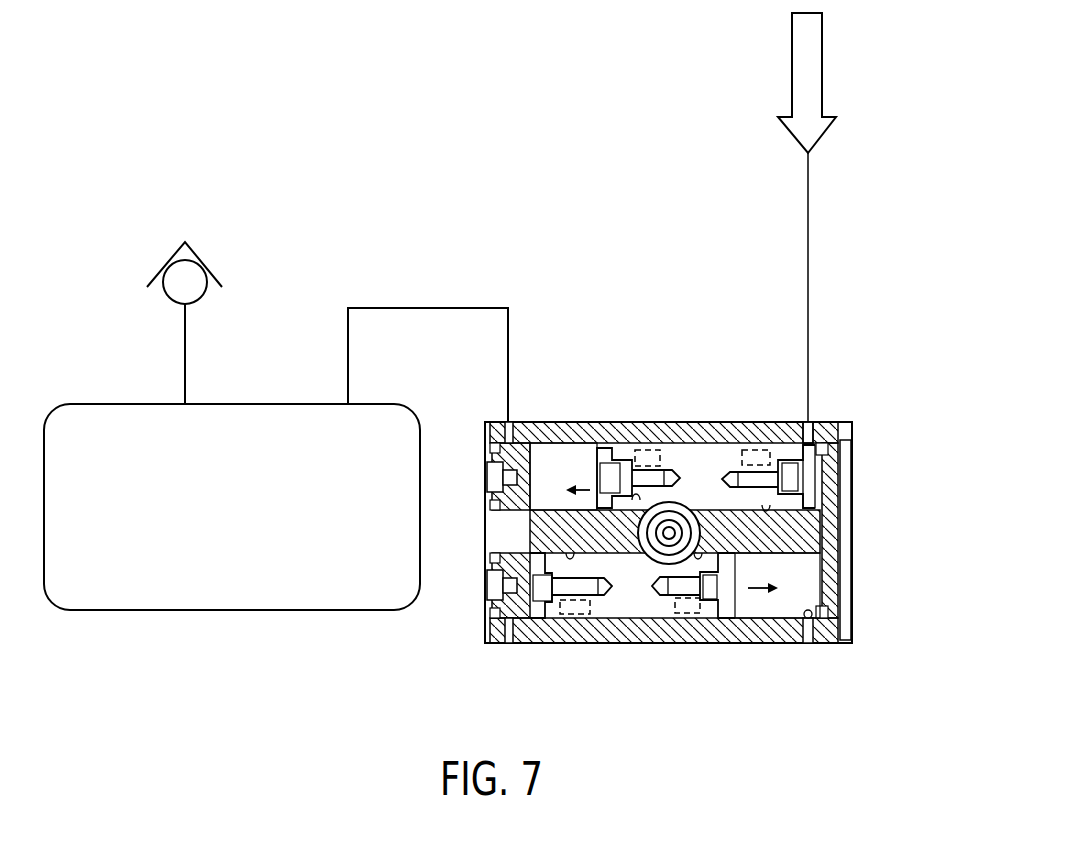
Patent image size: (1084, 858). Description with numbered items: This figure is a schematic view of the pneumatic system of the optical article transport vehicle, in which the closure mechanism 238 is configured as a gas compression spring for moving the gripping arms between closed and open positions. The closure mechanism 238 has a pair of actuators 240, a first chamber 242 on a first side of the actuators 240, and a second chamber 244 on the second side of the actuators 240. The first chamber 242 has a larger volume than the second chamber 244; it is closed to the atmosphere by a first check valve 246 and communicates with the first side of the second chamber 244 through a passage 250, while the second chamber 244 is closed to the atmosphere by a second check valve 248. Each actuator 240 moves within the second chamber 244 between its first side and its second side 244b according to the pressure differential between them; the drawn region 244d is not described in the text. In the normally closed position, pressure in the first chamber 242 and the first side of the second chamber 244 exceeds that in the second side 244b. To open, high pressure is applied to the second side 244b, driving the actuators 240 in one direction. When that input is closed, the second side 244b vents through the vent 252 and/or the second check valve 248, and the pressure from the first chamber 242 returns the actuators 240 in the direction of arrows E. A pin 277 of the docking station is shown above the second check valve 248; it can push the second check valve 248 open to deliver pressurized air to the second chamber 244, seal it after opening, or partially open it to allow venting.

The closure mechanism 238 is at (488, 153).
The actuator 240 is at (703, 470).
The first chamber 242 is at (255, 522).
The second chamber 244 is at (590, 432).
The second side of the second chamber 244b is at (848, 455).
The cylinder chamber 244d is at (552, 473).
The first check valve 246 is at (202, 262).
The second check valve 248 is at (813, 438).
The passage 250 is at (438, 308).
The vent 252 is at (810, 482).
The pin 277 is at (822, 48).